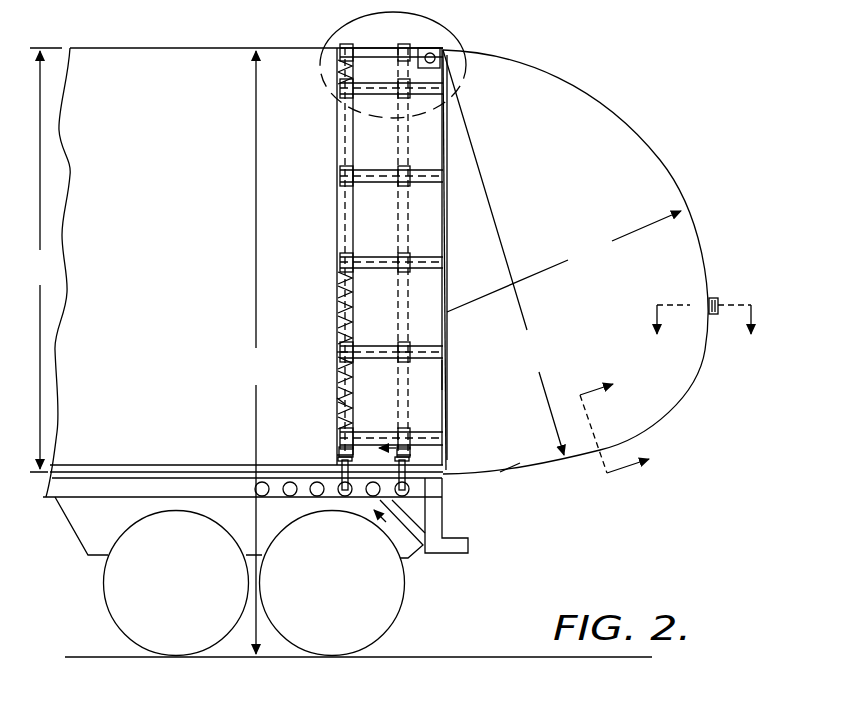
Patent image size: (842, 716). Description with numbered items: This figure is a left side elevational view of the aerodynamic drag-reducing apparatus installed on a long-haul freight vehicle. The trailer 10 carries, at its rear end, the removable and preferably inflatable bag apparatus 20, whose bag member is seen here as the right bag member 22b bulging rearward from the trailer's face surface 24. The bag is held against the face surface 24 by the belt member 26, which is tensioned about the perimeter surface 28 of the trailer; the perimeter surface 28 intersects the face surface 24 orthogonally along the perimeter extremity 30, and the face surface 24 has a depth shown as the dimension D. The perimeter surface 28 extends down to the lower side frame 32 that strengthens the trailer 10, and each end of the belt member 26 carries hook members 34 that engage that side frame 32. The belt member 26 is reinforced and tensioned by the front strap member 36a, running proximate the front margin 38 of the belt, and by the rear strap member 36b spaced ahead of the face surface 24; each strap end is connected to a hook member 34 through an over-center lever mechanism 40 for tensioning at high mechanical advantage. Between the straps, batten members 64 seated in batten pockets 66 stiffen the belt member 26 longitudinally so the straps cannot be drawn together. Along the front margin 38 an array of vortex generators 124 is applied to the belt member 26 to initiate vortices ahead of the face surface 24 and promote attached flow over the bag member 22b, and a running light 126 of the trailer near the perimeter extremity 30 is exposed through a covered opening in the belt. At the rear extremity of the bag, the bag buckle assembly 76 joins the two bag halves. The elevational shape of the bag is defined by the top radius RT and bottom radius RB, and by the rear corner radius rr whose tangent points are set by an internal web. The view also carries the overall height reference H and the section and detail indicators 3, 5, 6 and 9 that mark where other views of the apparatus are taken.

The trailer 10 is at (408, 619).
The bag apparatus 20 is at (503, 477).
The right bag member 22b is at (600, 90).
The face surface 24 is at (448, 372).
The belt member 26 is at (391, 246).
The perimeter surface 28 is at (311, 262).
The perimeter extremity 30 is at (462, 56).
The side frame 32 is at (316, 499).
The hook member 34 is at (345, 497).
The front strap member 36a is at (342, 358).
The rear strap member 36b is at (404, 361).
The front margin 38 is at (340, 402).
The over-center lever mechanism 40 is at (338, 461).
The batten member 64 is at (358, 184).
The batten pocket 66 is at (385, 172).
The bag buckle assembly 76 is at (716, 298).
The vortex generator 124 is at (308, 66).
The running light 126 is at (441, 50).
The section line 3- 3 is at (628, 425).
The detail circle 5 is at (342, 34).
The section line 6- 6 is at (374, 469).
The section line 9- 9 is at (722, 344).
The depth D is at (46, 260).
The dimension H is at (256, 352).
The top radius RT is at (564, 261).
The bottom radius RB is at (503, 252).
The rear corner radius rr is at (704, 393).